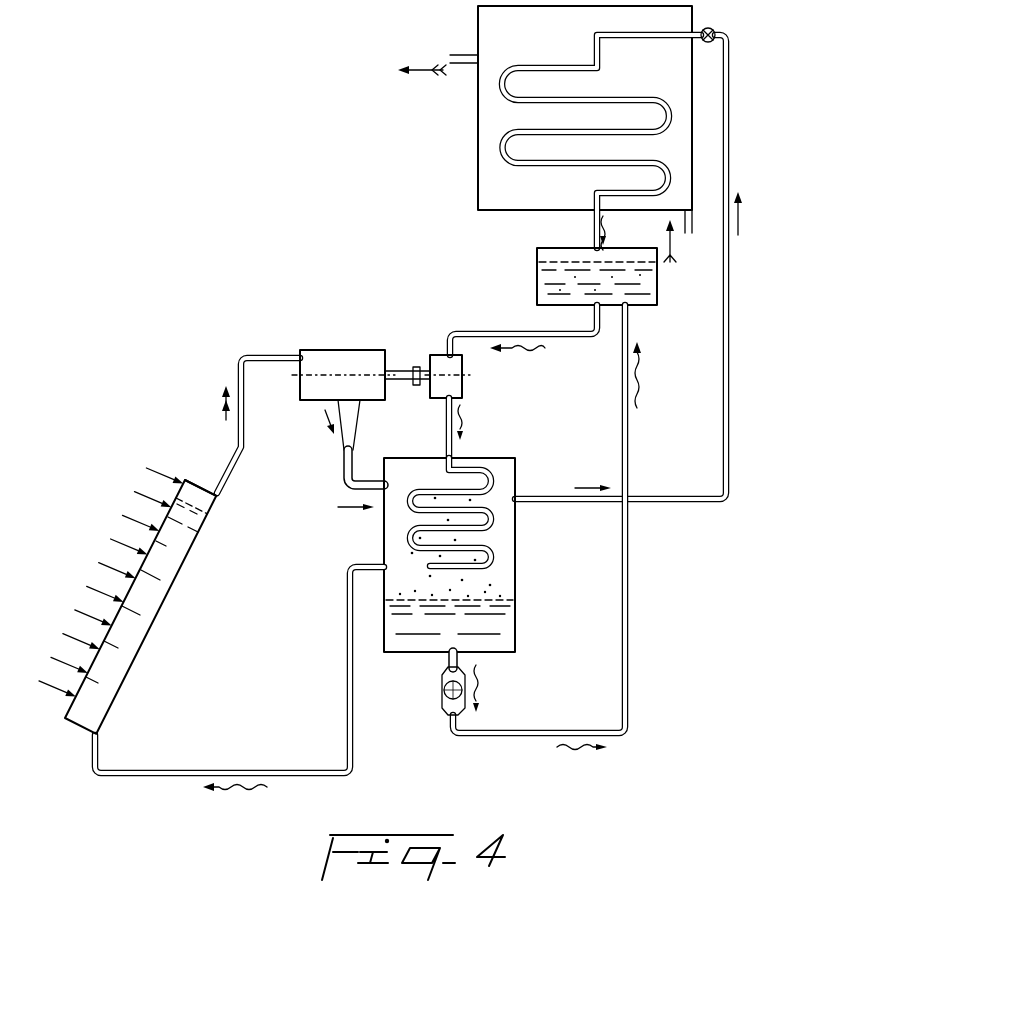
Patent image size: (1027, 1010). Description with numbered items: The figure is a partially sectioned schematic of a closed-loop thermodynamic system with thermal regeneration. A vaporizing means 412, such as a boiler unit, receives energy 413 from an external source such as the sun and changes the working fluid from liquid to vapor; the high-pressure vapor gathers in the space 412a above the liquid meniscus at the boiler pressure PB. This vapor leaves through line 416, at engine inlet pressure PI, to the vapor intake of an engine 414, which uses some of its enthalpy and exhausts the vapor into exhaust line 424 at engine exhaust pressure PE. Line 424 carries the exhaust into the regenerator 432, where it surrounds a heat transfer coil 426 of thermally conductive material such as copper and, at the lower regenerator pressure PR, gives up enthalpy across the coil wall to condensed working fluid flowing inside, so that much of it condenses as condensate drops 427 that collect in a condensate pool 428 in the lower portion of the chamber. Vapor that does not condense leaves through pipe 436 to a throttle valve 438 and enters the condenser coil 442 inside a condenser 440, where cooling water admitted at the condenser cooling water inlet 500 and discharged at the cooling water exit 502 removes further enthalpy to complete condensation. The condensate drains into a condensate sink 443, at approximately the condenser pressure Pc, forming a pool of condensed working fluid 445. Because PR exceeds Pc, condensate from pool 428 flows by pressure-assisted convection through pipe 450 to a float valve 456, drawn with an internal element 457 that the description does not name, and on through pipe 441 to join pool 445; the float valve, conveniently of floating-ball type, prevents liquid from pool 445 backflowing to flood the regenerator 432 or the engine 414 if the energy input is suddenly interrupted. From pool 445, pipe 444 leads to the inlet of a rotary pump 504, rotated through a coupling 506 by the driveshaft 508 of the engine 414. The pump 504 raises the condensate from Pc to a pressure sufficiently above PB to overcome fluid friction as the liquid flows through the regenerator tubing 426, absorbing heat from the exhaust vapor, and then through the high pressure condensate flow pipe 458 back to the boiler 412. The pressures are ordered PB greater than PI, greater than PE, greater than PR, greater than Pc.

The vaporizing means 412 is at (195, 550).
The space above the meniscus 412a is at (195, 488).
The energy 413 is at (133, 517).
The engine 414 is at (331, 348).
The line 416 is at (257, 354).
The exhaust line 424 is at (343, 471).
The heat transfer coil 426 is at (493, 553).
The condensate drops 427 is at (409, 551).
The condensate pool 428 is at (494, 594).
The regenerator 432 is at (492, 456).
The pipe 436 is at (675, 501).
The throttle valve 438 is at (715, 28).
The condenser 440 is at (478, 176).
The pipe 441 is at (628, 458).
The condenser coil 442 is at (544, 105).
The condensate sink 443 is at (565, 247).
The pipe 444 is at (507, 333).
The pool of condensed working fluid 445 is at (537, 253).
The pipe 450 is at (459, 655).
The float valve 456 is at (447, 703).
The pump impeller 457 is at (445, 679).
The high pressure condensate flow pipe 458 is at (247, 772).
The condenser cooling water inlet 500 is at (687, 236).
The cooling water exit 502 is at (462, 55).
The rotary pump 504 is at (462, 383).
The coupling 506 is at (420, 366).
The driveshaft 508 is at (397, 367).
The condenser pressure Pc is at (636, 17).
The engine inlet pressure PI is at (280, 337).
The engine exhaust pressure PE is at (352, 417).
The boiler pressure PB is at (218, 494).
The regenerator pressure PR is at (505, 472).